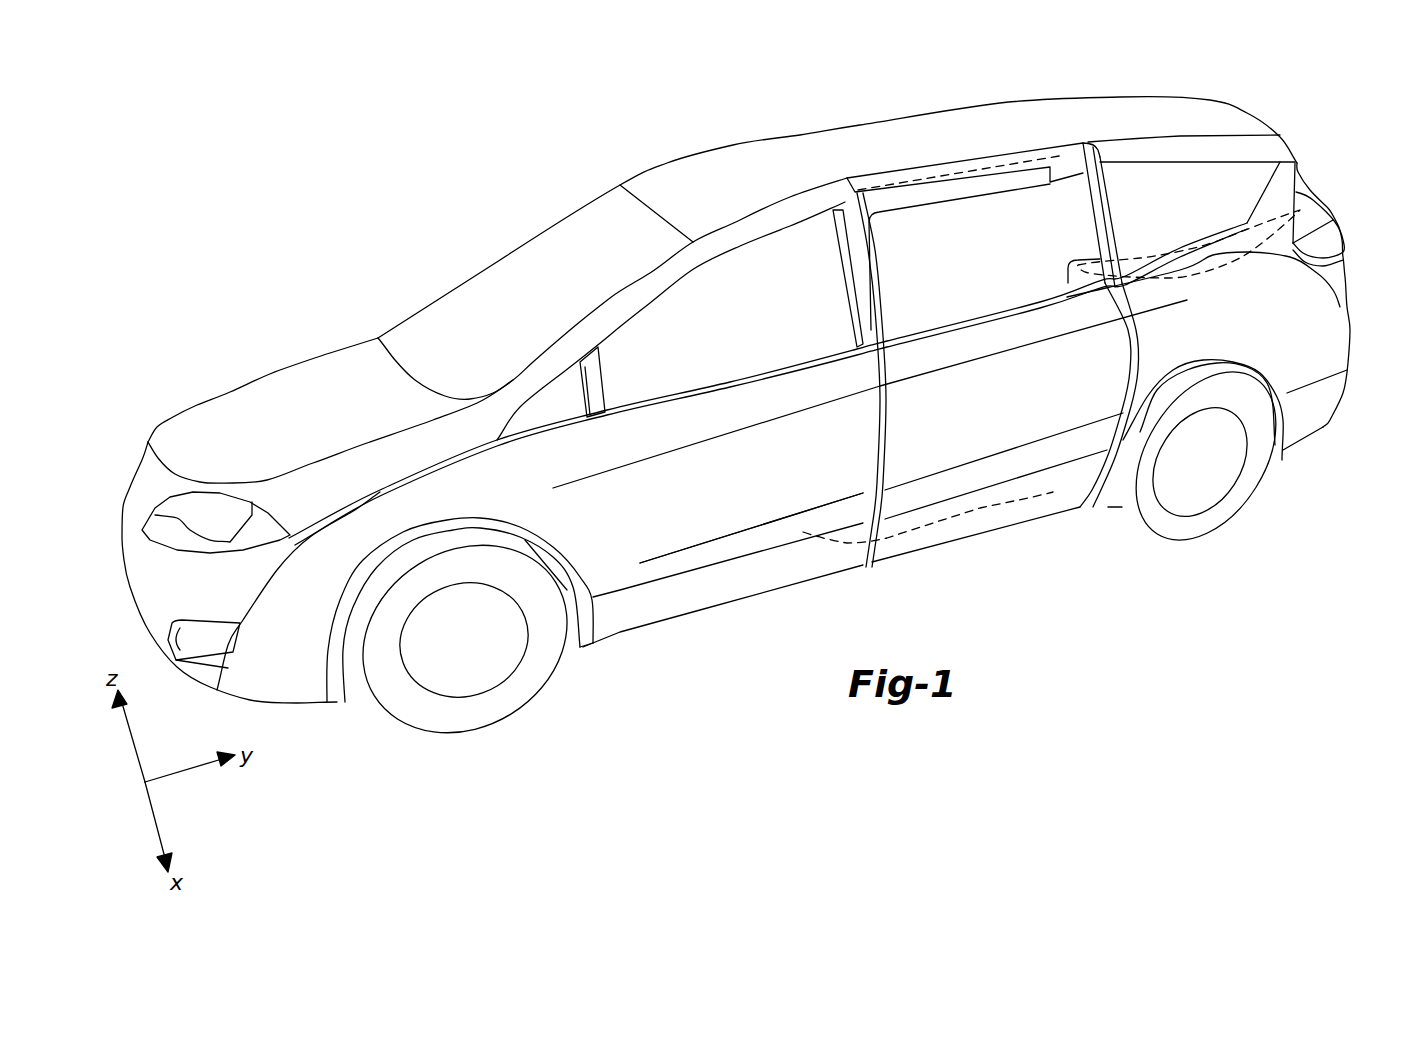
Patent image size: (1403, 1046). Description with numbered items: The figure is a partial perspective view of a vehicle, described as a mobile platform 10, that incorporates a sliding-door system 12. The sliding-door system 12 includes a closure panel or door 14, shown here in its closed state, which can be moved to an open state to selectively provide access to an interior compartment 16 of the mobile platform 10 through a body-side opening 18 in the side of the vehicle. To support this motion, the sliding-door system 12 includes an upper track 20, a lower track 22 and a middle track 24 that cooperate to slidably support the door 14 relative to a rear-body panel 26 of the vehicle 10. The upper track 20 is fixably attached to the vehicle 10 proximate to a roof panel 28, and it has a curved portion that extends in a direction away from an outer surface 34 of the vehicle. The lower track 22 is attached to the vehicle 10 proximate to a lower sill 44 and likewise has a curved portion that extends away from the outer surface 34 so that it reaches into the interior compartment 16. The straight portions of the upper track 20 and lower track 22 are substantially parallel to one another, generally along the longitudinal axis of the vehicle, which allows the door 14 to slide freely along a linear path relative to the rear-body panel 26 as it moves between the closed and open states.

The mobile platform 10 is at (762, 127).
The sliding-door system 12 is at (1135, 233).
The door 14 is at (944, 455).
The interior compartment 16 is at (993, 218).
The body-side opening 18 is at (882, 403).
The upper track 20 is at (973, 173).
The lower track 22 is at (1033, 497).
The middle track 24 is at (1300, 210).
The rear-body panel 26 is at (1200, 345).
The roof panel 28 is at (878, 140).
The outer surface 34 is at (695, 490).
The lower sill 44 is at (963, 532).